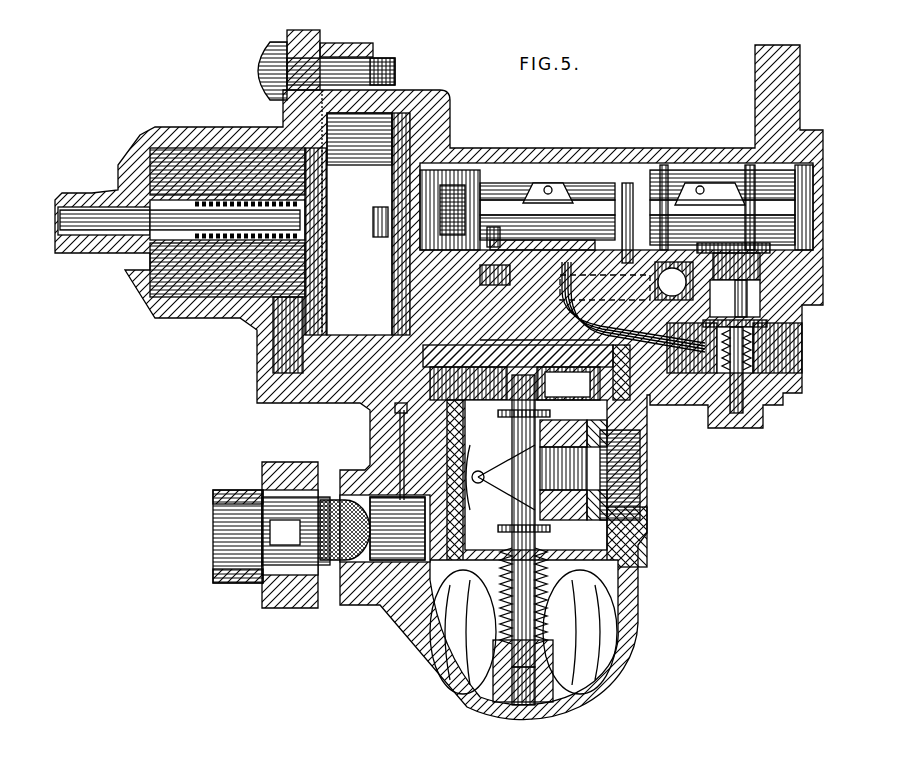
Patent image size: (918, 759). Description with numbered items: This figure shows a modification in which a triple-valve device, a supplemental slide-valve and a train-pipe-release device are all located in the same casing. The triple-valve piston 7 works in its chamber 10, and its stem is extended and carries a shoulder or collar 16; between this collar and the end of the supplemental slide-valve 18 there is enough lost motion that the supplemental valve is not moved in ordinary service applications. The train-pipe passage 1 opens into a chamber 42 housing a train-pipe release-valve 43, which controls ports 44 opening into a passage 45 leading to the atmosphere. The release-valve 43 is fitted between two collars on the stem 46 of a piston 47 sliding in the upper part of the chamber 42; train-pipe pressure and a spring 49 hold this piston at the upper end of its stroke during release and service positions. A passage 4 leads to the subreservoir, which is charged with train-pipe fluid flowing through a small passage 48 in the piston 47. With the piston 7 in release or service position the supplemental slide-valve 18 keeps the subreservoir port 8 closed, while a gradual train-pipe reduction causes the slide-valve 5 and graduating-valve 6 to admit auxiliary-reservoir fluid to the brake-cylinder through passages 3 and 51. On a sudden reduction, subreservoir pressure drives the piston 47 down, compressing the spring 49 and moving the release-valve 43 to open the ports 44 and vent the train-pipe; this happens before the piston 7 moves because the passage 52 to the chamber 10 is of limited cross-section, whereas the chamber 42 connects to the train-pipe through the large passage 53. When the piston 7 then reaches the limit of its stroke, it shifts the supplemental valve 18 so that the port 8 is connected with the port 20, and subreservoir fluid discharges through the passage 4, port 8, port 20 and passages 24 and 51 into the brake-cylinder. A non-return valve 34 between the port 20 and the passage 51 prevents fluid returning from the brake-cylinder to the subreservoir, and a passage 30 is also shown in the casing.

The train-pipe passage 1 is at (528, 381).
The passage 3 is at (656, 330).
The passage 4 is at (672, 282).
The slide-valve 5 is at (547, 211).
The graduating-valve 6 is at (548, 202).
The triple-valve piston 7 is at (395, 262).
The port 8 is at (635, 258).
The chamber 10 is at (359, 224).
The shoulder or collar 16 is at (818, 230).
The supplemental slide-valve 18 is at (710, 203).
The port 20 is at (758, 278).
The passage 24 is at (750, 297).
The passage 30 is at (520, 298).
The non-return valve 34 is at (717, 366).
The chamber 42 is at (505, 408).
The train-pipe release-valve 43 is at (542, 480).
The ports 44 is at (615, 440).
The passage 45 is at (640, 478).
The stem 46 is at (520, 476).
The piston 47 is at (568, 383).
The small passage 48 is at (480, 366).
The spring 49 is at (545, 598).
The passage 51 is at (777, 348).
The passage 52 is at (400, 432).
The large passage 53 is at (397, 538).